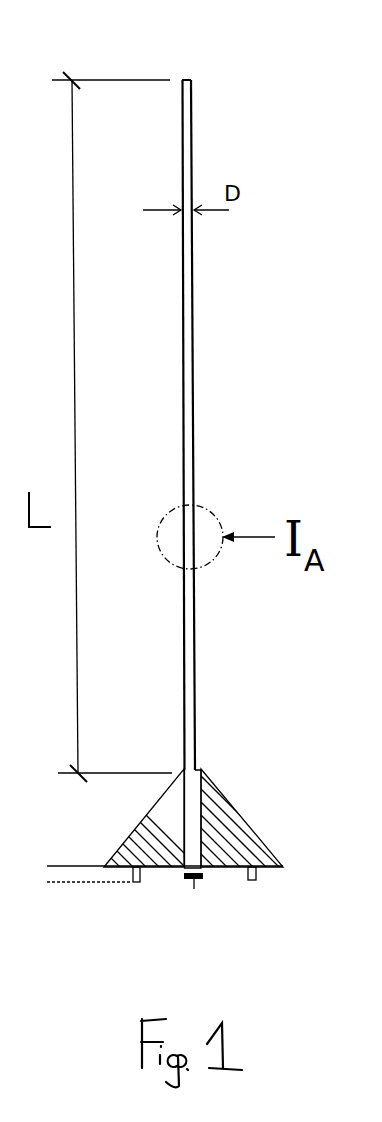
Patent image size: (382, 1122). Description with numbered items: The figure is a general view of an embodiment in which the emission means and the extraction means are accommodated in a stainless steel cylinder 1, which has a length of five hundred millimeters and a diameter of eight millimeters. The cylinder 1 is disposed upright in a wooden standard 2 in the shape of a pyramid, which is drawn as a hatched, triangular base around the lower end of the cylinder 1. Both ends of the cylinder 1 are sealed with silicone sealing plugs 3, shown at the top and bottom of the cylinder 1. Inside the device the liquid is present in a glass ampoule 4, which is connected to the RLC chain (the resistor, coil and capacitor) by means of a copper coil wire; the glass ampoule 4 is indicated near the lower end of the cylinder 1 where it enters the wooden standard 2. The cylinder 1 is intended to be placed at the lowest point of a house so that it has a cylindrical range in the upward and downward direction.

The stainless steel cylinder 1 is at (195, 411).
The wooden standard 2 is at (247, 842).
The silicone sealing plugs 3 is at (184, 60).
The glass ampoule 4 is at (186, 800).